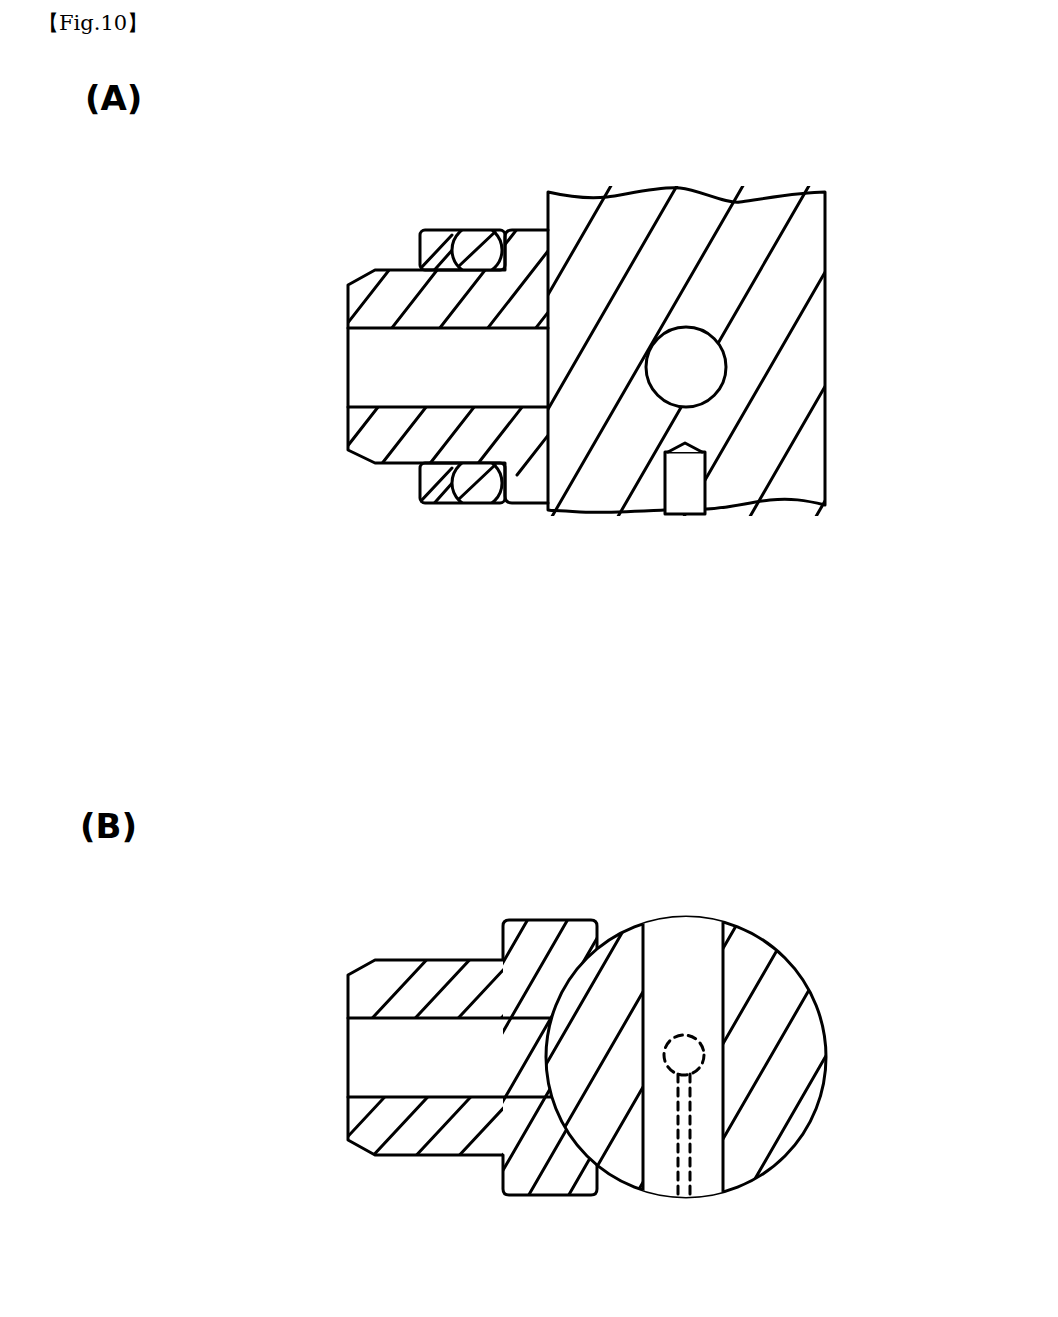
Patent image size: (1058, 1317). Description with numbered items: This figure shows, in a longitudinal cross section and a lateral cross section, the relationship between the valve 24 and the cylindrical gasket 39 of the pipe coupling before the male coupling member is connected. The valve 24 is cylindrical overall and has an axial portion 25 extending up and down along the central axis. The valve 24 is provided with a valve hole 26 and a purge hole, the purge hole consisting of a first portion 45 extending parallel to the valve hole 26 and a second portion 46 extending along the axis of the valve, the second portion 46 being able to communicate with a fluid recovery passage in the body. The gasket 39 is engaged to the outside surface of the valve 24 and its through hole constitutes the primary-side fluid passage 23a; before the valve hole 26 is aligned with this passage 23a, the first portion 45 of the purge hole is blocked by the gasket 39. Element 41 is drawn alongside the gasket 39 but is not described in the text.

The primary-side fluid passage 23a is at (377, 362).
The valve 24 is at (806, 323).
The axial portion 25 is at (806, 245).
The valve hole 26 is at (704, 372).
The cylindrical gasket 39 is at (377, 441).
The ball bearing 41 is at (478, 236).
The first portion of the purge hole 45 is at (703, 452).
The second portion of the purge hole 46 is at (690, 484).